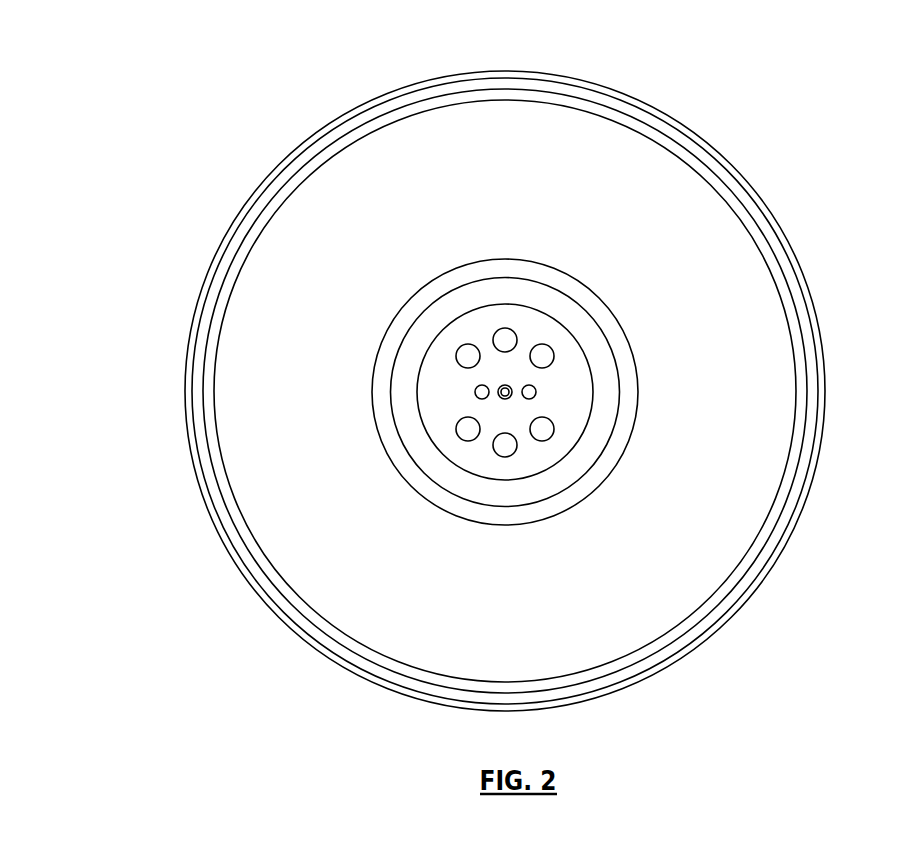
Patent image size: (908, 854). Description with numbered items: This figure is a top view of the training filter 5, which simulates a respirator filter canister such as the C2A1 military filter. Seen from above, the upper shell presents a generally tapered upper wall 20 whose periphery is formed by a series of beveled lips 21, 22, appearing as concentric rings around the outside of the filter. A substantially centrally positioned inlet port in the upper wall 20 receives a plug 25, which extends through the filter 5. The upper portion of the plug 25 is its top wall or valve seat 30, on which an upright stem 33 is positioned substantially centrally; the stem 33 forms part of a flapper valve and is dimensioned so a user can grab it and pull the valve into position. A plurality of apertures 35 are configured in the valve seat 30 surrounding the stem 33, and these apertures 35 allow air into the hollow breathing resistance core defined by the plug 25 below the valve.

The training filter 5 is at (825, 124).
The upper wall 20 is at (265, 443).
The beveled lip 21 is at (590, 107).
The beveled lip 22 is at (677, 137).
The plug 25 is at (419, 405).
The top wall or valve seat 30 is at (568, 393).
The stem 33 is at (505, 390).
The apertures 35 is at (460, 354).